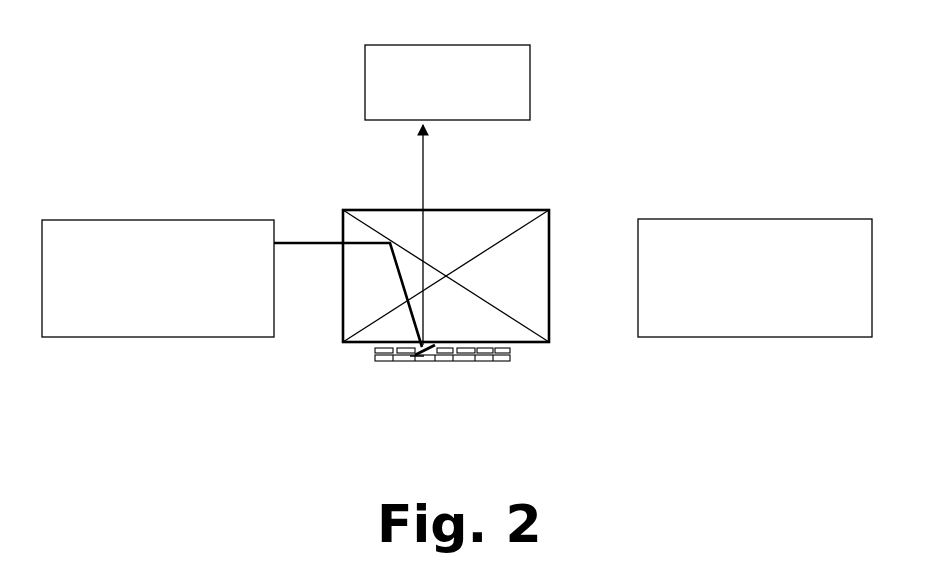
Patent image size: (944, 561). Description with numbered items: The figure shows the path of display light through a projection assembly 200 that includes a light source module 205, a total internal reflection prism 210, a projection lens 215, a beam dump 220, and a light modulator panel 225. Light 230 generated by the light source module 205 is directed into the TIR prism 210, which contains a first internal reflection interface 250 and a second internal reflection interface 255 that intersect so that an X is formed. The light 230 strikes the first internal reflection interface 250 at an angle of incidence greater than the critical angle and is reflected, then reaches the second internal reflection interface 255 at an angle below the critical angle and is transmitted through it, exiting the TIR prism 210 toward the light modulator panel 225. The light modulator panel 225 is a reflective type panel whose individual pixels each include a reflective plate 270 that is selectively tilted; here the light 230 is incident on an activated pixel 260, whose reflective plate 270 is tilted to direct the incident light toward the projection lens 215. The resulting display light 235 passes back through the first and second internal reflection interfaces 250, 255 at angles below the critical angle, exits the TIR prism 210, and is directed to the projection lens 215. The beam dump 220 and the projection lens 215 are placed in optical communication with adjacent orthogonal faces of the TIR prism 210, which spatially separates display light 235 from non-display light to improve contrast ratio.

The projection assembly 200 is at (262, 66).
The light source module 205 is at (162, 220).
The total internal reflection (TIR) prism 210 is at (336, 339).
The projection lens 215 is at (530, 93).
The beam dump 220 is at (757, 219).
The light modulator panel 225 is at (436, 396).
The light 230 is at (306, 243).
The display light 235 is at (423, 165).
The first internal reflection interface 250 is at (377, 228).
The second internal reflection interface 255 is at (511, 228).
The activated pixel 260 is at (430, 365).
The reflective plate 270 is at (416, 357).